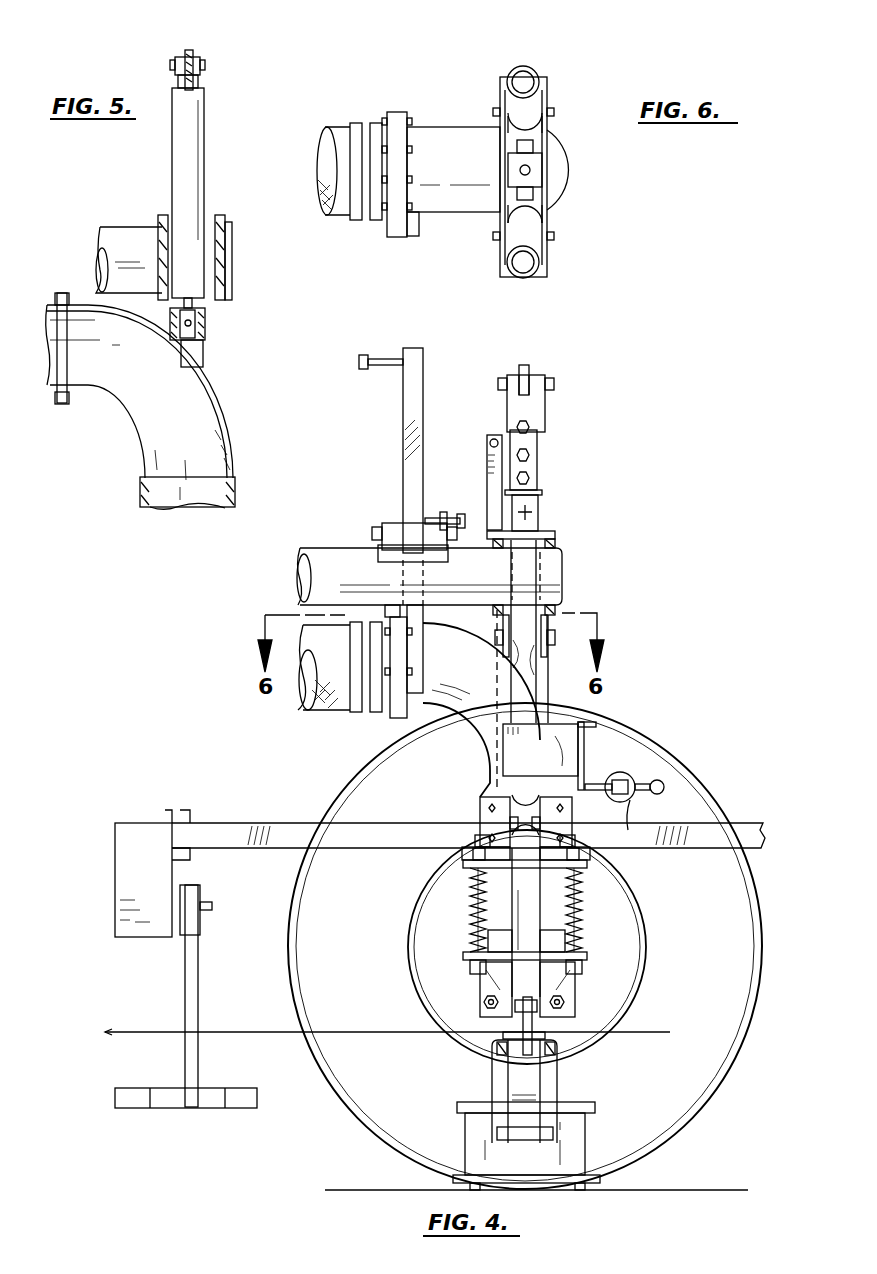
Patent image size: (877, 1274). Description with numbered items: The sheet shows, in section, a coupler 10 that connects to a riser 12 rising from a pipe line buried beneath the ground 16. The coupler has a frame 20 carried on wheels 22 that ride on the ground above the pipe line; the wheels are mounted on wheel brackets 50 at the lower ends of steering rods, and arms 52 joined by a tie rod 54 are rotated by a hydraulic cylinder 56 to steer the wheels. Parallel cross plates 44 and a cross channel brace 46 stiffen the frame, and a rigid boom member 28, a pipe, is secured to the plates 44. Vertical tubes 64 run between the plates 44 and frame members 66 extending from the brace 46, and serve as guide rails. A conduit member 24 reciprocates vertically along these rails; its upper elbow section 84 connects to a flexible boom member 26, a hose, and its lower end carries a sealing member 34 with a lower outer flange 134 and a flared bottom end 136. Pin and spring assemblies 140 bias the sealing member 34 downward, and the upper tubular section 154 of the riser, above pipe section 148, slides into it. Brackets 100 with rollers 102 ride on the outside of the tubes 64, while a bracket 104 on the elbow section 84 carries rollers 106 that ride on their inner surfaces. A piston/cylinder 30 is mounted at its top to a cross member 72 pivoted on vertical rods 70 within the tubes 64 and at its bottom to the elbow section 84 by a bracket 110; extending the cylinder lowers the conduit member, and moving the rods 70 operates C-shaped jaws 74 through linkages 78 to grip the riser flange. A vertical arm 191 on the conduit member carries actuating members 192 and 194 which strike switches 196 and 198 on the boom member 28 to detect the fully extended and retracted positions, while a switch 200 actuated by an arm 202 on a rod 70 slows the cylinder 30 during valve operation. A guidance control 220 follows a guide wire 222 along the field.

In FIG. 4, the coupler 10 is at (688, 671).
In FIG. 4, the riser 12 is at (585, 1098).
In FIG. 4, the ground 16 is at (690, 1188).
In FIG. 4, the frame 20 is at (576, 568).
In FIG. 4, the wheels 22 is at (705, 795).
In FIG. 5, the conduit member 24 is at (237, 404).
In FIG. 6, the conduit member 24 is at (445, 120).
In FIG. 4, the conduit member 24 is at (463, 768).
In FIG. 5, the boom member 26 is at (50, 300).
In FIG. 6, the boom member 26 is at (340, 127).
In FIG. 4, the boom member 26 is at (325, 712).
In FIG. 5, the boom member 28 is at (115, 232).
In FIG. 4, the boom member 28 is at (317, 555).
In FIG. 5, the piston/cylinder 30 is at (205, 160).
In FIG. 6, the piston/cylinder 30 is at (534, 168).
In FIG. 4, the piston/cylinder 30 is at (522, 665).
In FIG. 4, the sealing member 34 is at (562, 952).
In FIG. 5, the cross plates 44 is at (222, 215).
In FIG. 4, the cross plates 44 is at (556, 546).
In FIG. 4, the cross channel brace 46 is at (588, 778).
In FIG. 4, the wheel brackets 50 is at (480, 995).
In FIG. 4, the arms 52 is at (627, 772).
In FIG. 4, the tie rod 54 is at (660, 780).
In FIG. 4, the hydraulic cylinder 56 is at (630, 830).
In FIG. 6, the vertical tubes 64 is at (532, 68).
In FIG. 4, the vertical tubes 64 is at (540, 516).
In FIG. 4, the frame members 66 is at (548, 740).
In FIG. 4, the vertical rods 70 is at (540, 468).
In FIG. 5, the cross member 72 is at (190, 48).
In FIG. 4, the cross member 72 is at (535, 375).
In FIG. 4, the C-shaped jaws 74 is at (497, 1120).
In FIG. 4, the linkages 78 is at (545, 1032).
In FIG. 5, the upper elbow section 84 is at (133, 427).
In FIG. 6, the upper elbow section 84 is at (470, 213).
In FIG. 4, the upper elbow section 84 is at (447, 715).
In FIG. 4, the brackets 100 is at (480, 805).
In FIG. 4, the rollers 102 is at (458, 850).
In FIG. 6, the bracket 104 is at (548, 122).
In FIG. 6, the rollers 106 is at (535, 105).
In FIG. 4, the rollers 106 is at (550, 625).
In FIG. 5, the bracket 110 is at (207, 345).
In FIG. 6, the bracket 110 is at (548, 205).
In FIG. 4, the lower outer flange 134 is at (590, 956).
In FIG. 4, the flared bottom end 136 is at (490, 970).
In FIG. 4, the pin and spring assemblies 140 is at (470, 900).
In FIG. 4, the pipe section 148 is at (590, 1132).
In FIG. 4, the tubular section 154 is at (492, 1075).
In FIG. 6, the vertical arm 191 is at (420, 245).
In FIG. 4, the vertical arm 191 is at (420, 416).
In FIG. 4, the actuating member 192 is at (378, 370).
In FIG. 4, the actuating member 194 is at (433, 518).
In FIG. 4, the switch 196 is at (385, 520).
In FIG. 4, the switch 198 is at (445, 561).
In FIG. 4, the switch 200 is at (487, 443).
In FIG. 4, the arm 202 is at (531, 455).
In FIG. 4, the guidance control 220 is at (104, 909).
In FIG. 4, the guide wire 222 is at (130, 1030).